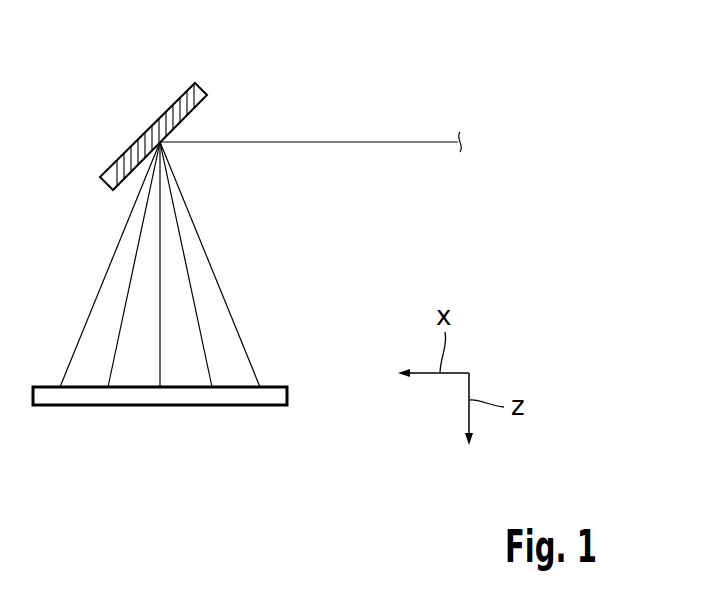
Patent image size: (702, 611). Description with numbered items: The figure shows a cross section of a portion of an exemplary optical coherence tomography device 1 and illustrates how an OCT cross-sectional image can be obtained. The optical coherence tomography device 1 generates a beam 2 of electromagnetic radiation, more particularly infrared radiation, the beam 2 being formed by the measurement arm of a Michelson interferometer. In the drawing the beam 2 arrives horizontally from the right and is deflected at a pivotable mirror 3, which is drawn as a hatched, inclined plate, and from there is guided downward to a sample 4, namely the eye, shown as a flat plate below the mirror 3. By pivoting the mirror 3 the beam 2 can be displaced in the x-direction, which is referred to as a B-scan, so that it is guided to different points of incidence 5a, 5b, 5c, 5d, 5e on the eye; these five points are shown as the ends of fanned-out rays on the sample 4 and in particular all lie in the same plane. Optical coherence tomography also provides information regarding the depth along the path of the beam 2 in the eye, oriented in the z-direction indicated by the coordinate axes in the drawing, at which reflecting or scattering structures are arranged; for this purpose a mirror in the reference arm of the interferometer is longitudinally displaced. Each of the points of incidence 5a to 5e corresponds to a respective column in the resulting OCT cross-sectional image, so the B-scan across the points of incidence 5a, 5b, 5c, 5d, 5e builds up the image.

The optical coherence tomography device 1 is at (352, 226).
The beam 2 is at (380, 142).
The pivotable mirror 3 is at (135, 141).
The sample 4 is at (183, 400).
The point of incidence 5a is at (58, 386).
The point of incidence 5b is at (108, 386).
The point of incidence 5c is at (160, 387).
The point of incidence 5d is at (212, 387).
The point of incidence 5e is at (260, 387).